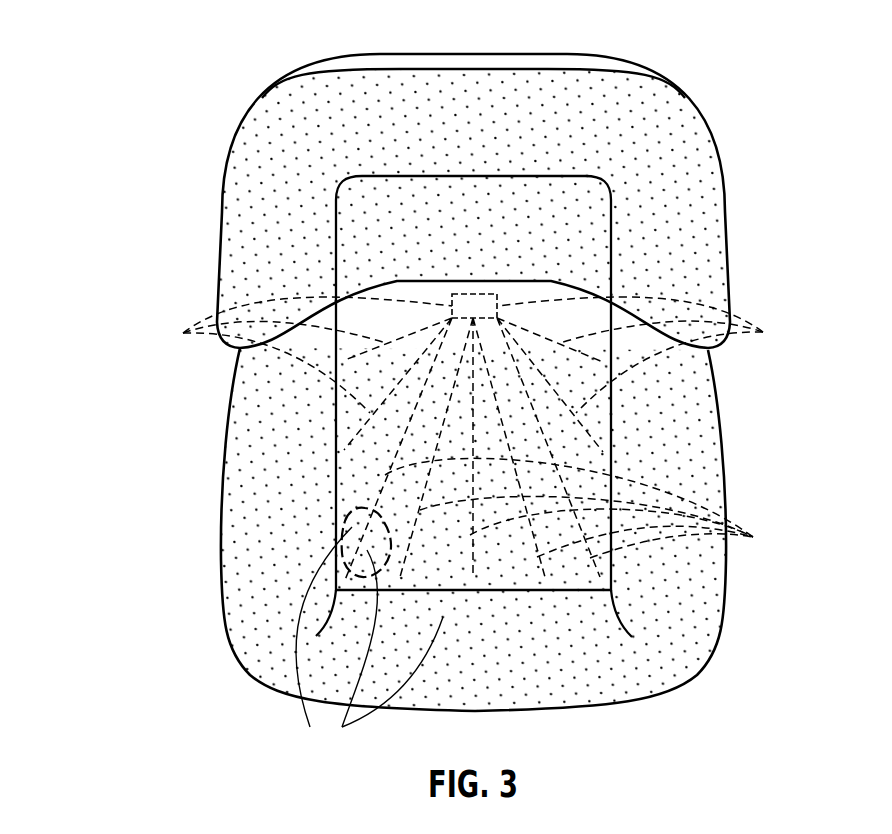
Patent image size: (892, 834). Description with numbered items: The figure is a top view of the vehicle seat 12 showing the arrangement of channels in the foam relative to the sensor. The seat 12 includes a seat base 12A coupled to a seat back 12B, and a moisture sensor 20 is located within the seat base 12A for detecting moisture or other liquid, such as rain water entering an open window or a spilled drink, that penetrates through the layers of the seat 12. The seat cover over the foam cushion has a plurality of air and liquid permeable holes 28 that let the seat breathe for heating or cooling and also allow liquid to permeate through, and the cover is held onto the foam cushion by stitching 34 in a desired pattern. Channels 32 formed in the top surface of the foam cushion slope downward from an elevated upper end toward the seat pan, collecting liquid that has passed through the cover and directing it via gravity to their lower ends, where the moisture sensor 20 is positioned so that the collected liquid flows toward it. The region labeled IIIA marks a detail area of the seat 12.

The vehicle seat 12 is at (140, 116).
The seat base 12A is at (223, 582).
The seat back 12B is at (217, 258).
The moisture sensor 20 is at (495, 293).
The air and liquid permeable holes 28 is at (369, 640).
The channels 32 is at (475, 429).
The stitching 34 is at (336, 473).
The detail region III A IIIA is at (345, 518).